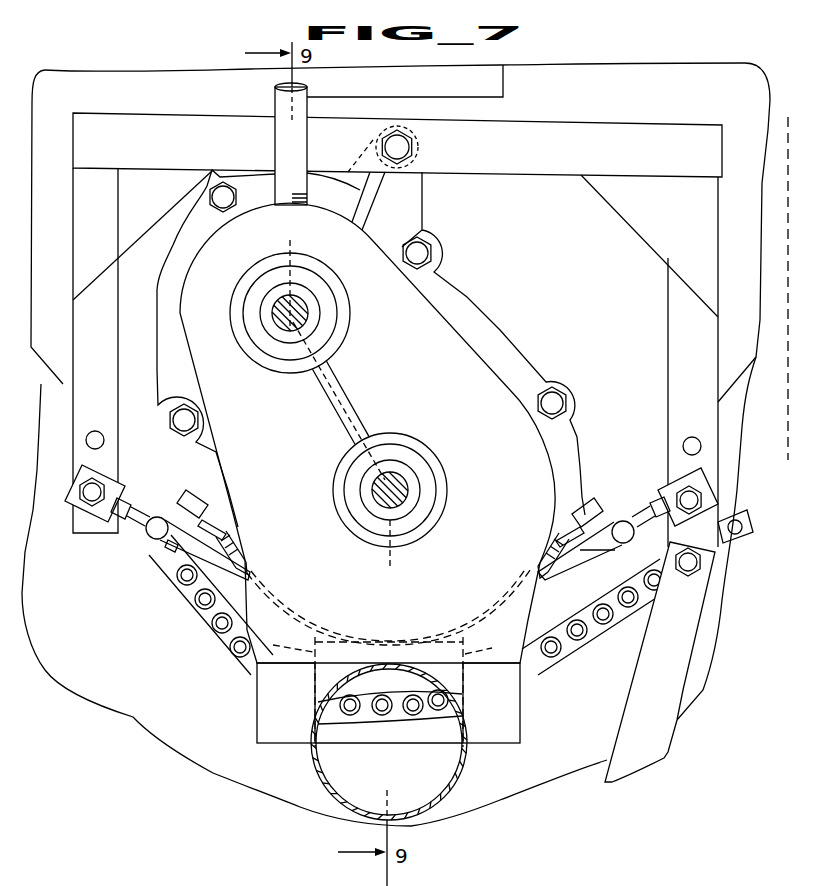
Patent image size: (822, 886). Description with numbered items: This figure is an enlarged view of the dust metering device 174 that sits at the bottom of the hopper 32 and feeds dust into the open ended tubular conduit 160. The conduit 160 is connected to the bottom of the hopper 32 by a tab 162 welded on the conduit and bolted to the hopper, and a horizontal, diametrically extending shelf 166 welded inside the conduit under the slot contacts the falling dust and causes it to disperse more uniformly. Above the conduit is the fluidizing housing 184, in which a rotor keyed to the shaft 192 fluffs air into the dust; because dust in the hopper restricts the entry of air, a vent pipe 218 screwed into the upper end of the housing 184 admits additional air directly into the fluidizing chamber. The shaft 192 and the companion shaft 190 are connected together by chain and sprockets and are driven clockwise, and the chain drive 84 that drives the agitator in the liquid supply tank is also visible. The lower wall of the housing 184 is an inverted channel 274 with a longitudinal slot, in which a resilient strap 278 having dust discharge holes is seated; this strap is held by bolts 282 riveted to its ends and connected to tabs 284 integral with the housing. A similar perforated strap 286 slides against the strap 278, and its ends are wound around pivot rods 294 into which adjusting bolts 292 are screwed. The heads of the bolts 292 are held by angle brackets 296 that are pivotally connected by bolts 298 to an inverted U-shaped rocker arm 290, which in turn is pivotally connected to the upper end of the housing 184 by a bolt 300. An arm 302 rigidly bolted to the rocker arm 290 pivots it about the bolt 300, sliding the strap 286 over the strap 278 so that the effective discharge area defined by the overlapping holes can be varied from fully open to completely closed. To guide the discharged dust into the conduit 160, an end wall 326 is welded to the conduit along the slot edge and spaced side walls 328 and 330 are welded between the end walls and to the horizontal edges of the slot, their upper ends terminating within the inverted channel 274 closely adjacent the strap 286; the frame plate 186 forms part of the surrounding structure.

The hopper 32 is at (672, 57).
The vent pipe 218 is at (291, 144).
The bolt 300 is at (402, 147).
The rocker arm 290 is at (598, 157).
The side frame plate 186 is at (548, 237).
The metering device 174 is at (463, 350).
The shaft 190 is at (297, 307).
The fluidizing housing 184 is at (292, 429).
The shaft 192 is at (397, 490).
The bolts 298 is at (100, 490).
The pivot rods 294 is at (160, 524).
The angle brackets 296 is at (95, 510).
The adjusting bolts 292 is at (150, 530).
The tabs 284 is at (215, 506).
The bolts 282 is at (215, 525).
The resilient strap 278 is at (242, 560).
The strap 286 is at (236, 590).
The chain drive 84 is at (212, 604).
The inverted channel 274 is at (512, 620).
The side wall 328 is at (359, 687).
The side wall 330 is at (494, 687).
The tab 162 is at (270, 700).
The tubular conduit 160 is at (316, 762).
The shelf 166 is at (363, 745).
The end wall 326 is at (445, 672).
The arm 302 is at (640, 713).